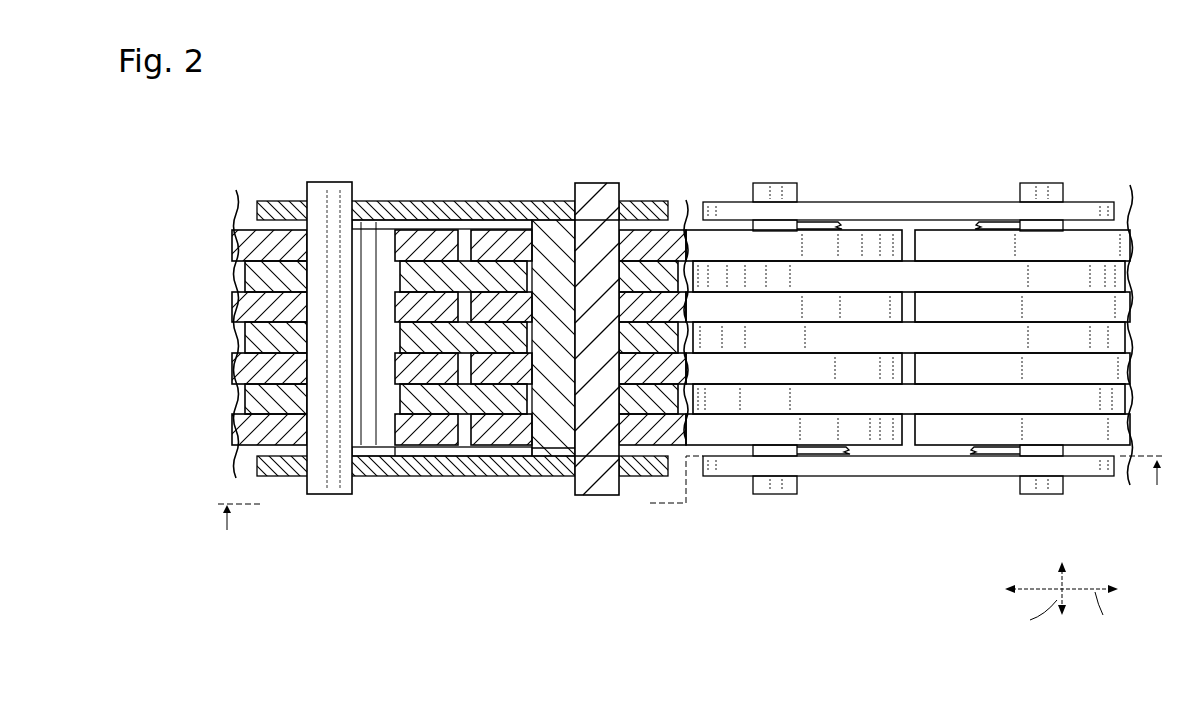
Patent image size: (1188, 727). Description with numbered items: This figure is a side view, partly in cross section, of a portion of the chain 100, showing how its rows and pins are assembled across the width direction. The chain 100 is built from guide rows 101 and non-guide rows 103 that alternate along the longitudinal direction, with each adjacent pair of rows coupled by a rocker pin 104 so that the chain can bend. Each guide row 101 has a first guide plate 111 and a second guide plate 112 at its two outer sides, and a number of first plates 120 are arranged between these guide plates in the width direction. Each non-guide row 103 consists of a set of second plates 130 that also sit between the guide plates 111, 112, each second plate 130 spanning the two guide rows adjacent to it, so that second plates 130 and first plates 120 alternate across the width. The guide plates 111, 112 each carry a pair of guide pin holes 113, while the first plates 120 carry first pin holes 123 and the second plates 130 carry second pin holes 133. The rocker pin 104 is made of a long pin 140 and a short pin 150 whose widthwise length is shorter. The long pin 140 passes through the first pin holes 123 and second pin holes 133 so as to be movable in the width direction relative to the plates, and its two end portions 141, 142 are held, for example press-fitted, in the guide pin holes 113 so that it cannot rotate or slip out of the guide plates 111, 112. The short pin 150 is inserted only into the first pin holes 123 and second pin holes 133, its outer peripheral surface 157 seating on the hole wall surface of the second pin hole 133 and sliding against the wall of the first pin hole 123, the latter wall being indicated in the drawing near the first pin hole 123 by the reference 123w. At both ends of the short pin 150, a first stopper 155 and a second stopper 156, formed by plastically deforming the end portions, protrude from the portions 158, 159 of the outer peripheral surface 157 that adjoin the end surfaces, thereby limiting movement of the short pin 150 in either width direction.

The chain 100 is at (278, 588).
The guide row 101 is at (257, 89).
The non-guide row 103 is at (905, 567).
The rocker pin 104 is at (678, 340).
The first guide plate 111 is at (510, 470).
The second guide plate 112 is at (473, 203).
The guide pin hole 113 is at (588, 195).
The first plate 120 is at (722, 268).
The first pin hole 123 is at (455, 326).
The bus bar width 123w is at (542, 452).
The second plate 130 is at (280, 240).
The second pin hole 133 is at (685, 341).
The long pin 140 is at (678, 329).
The end portion of long pin 141 is at (597, 478).
The end portion of long pin 142 is at (612, 192).
The short pin 150 is at (560, 230).
The first stopper 155 is at (686, 491).
The second stopper 156 is at (403, 222).
The outer peripheral surface 157 is at (362, 277).
The portion of outer peripheral surface 158 is at (391, 460).
The portion of outer peripheral surface 159 is at (393, 277).